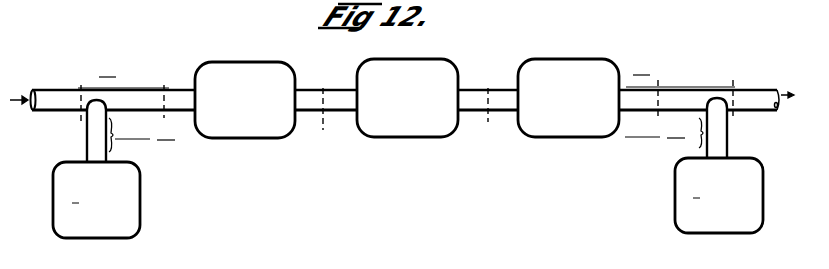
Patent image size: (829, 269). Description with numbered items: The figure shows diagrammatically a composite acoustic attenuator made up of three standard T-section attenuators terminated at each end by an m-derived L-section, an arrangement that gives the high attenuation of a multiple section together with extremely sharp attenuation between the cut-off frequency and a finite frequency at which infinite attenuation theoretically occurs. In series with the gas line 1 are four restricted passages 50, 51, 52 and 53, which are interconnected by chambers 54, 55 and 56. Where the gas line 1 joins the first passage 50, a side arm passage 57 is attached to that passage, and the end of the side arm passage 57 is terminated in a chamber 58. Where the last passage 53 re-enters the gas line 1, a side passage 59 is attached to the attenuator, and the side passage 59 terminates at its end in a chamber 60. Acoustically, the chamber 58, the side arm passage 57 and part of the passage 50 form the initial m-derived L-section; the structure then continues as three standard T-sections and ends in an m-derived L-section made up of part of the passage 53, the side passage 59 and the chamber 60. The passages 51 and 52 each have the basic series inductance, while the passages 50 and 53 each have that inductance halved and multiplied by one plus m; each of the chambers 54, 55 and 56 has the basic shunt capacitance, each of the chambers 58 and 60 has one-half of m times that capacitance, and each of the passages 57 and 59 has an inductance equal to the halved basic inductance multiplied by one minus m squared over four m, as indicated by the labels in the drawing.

The gas line 1 is at (757, 110).
The restricted passage 50 is at (93, 87).
The restricted passage 51 is at (306, 89).
The restricted passage 52 is at (506, 89).
The restricted passage 53 is at (626, 85).
The chamber 54 is at (270, 139).
The chamber 55 is at (418, 138).
The chamber 56 is at (555, 138).
The side arm passage 57 is at (82, 136).
The chamber 58 is at (140, 205).
The side passage 59 is at (729, 137).
The chamber 60 is at (715, 234).